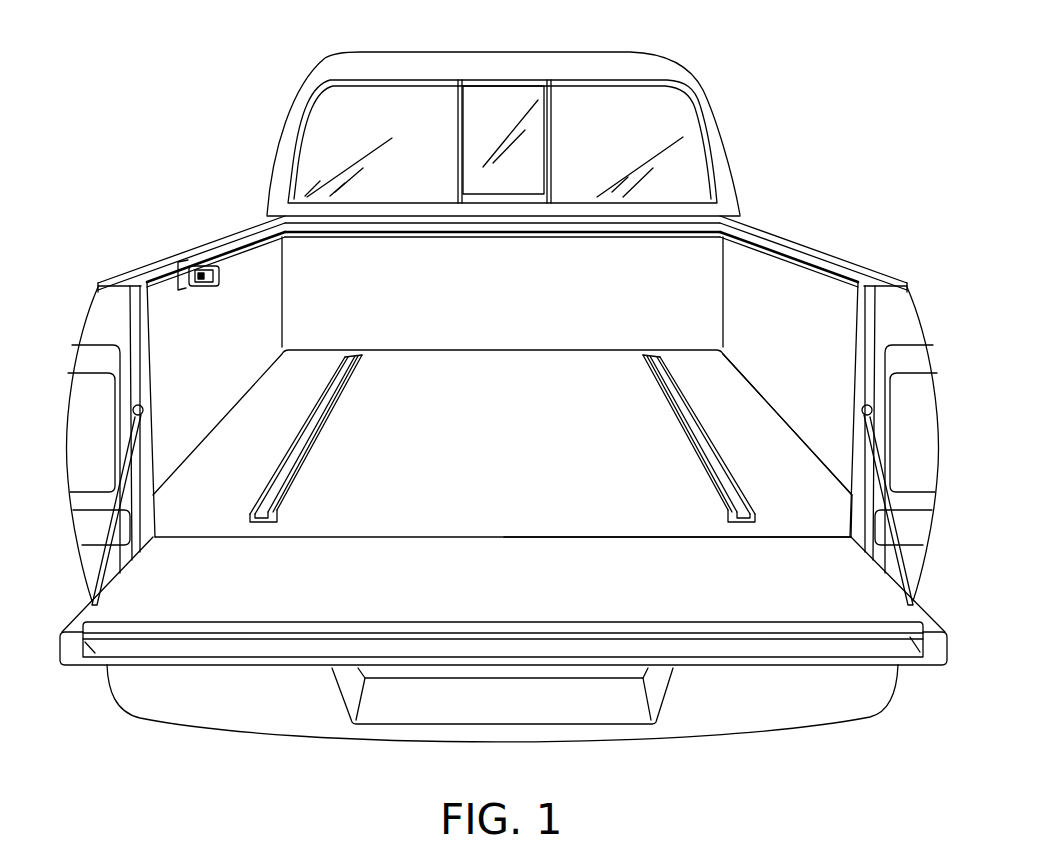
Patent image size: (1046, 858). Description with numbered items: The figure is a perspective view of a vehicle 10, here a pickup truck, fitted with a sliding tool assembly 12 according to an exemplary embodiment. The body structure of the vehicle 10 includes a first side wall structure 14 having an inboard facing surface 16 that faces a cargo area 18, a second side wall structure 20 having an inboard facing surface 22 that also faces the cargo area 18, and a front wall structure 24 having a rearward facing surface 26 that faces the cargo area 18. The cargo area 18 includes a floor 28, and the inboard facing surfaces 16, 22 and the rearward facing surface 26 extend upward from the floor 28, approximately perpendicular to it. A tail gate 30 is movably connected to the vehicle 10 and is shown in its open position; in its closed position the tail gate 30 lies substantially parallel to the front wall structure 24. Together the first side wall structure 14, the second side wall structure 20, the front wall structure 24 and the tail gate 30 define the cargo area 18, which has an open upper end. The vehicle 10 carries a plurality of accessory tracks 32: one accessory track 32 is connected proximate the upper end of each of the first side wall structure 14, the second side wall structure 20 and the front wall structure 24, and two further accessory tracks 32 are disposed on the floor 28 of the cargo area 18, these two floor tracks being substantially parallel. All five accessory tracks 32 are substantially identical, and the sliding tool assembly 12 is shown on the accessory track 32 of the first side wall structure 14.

The vehicle 10 is at (599, 50).
The sliding tool assembly 12 is at (262, 263).
The first side wall structure 14 is at (220, 236).
The inboard facing surface 16 is at (168, 334).
The cargo area 18 is at (665, 493).
The second side wall structure 20 is at (786, 234).
The inboard facing surface 22 is at (837, 335).
The front wall structure 24 is at (423, 216).
The rearward facing surface 26 is at (664, 272).
The floor 28 is at (342, 500).
The tail gate 30 is at (67, 626).
The accessory track 32 is at (158, 262).